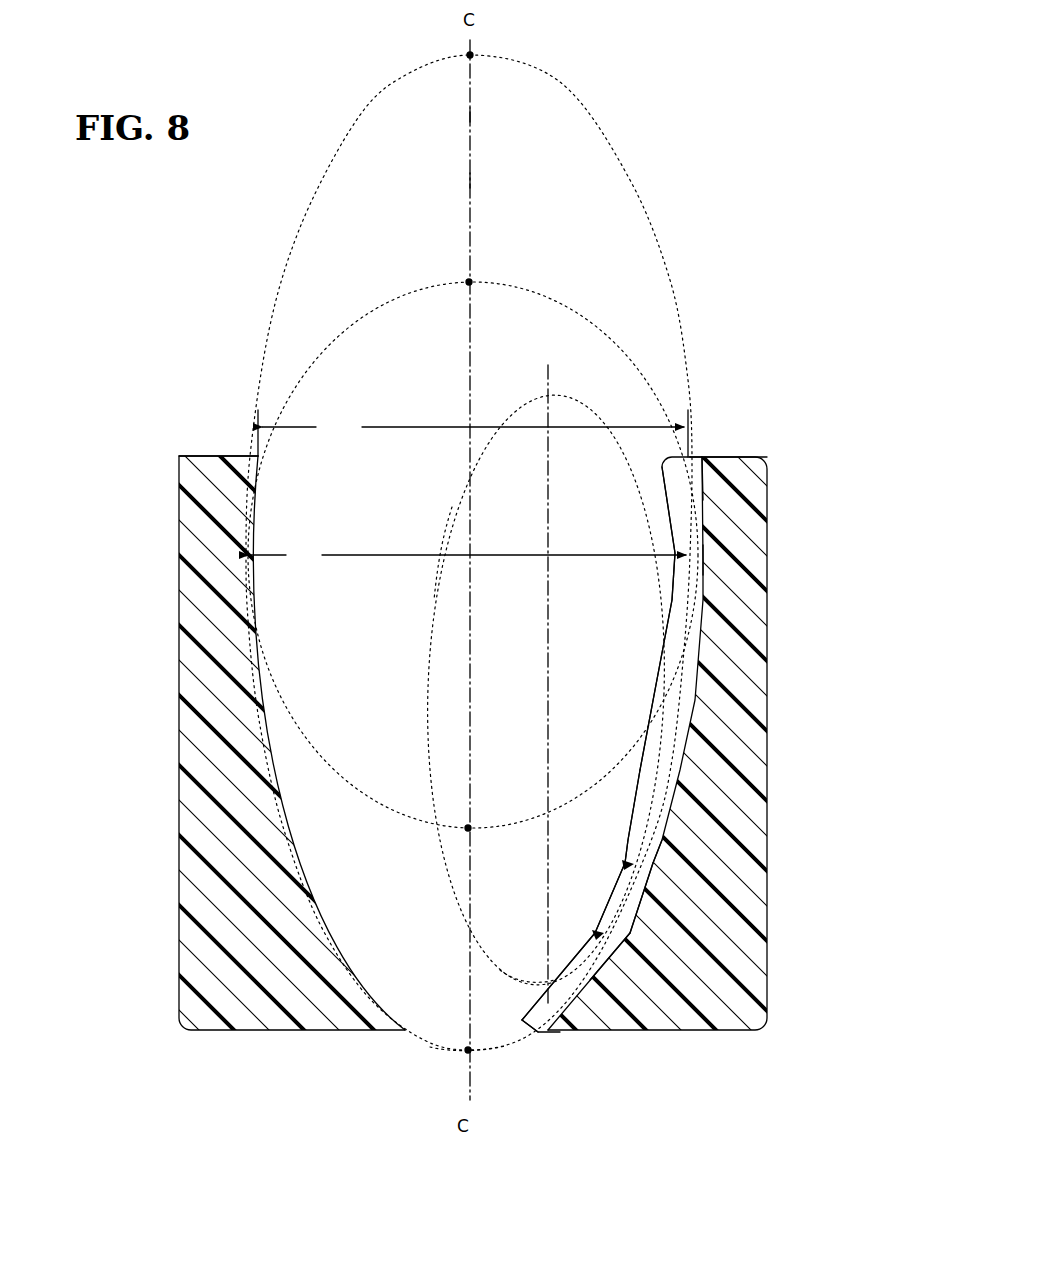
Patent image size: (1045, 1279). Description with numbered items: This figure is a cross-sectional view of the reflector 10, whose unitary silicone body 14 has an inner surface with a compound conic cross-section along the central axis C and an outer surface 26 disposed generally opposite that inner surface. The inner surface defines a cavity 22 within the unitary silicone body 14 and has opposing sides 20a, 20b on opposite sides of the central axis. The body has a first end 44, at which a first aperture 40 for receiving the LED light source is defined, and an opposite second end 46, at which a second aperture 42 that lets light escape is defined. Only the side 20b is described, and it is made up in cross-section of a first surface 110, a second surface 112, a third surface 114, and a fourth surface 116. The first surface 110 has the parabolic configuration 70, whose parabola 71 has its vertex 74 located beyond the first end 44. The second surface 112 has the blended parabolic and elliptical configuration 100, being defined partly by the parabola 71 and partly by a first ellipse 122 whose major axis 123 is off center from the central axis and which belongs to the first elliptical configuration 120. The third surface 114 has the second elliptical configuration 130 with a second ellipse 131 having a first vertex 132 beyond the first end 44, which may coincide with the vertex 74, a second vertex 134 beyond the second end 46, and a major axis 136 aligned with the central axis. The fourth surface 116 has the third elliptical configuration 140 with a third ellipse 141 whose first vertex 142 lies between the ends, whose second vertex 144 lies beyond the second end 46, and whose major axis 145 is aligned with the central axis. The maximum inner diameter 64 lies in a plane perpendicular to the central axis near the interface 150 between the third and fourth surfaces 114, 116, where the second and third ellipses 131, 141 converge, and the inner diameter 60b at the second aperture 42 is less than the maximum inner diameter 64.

The reflector 10 is at (780, 383).
The unitary silicone body 14 is at (706, 833).
The opposing side of inner surface 20a is at (282, 880).
The opposing side of inner surface 20b is at (708, 713).
The cavity 22 is at (384, 602).
The outer surface 26 is at (767, 665).
The first aperture 40 is at (437, 1030).
The second aperture 42 is at (297, 446).
The first end 44 is at (538, 1033).
The second end 46 is at (697, 457).
The inner diameter 60b is at (473, 433).
The maximum inner diameter 64 is at (467, 553).
The parabolic configuration 70 is at (612, 980).
The parabola 71 is at (505, 1052).
The vertex 74 is at (467, 1053).
The blended parabolic and elliptical configuration 100 is at (657, 893).
The first surface 110 is at (556, 984).
The second surface 112 is at (610, 898).
The third surface 114 is at (638, 768).
The fourth surface 116 is at (662, 516).
The first elliptical configuration 120 is at (637, 935).
The first ellipse 122 is at (452, 507).
The major axis 123 is at (556, 400).
The second elliptical configuration 130 is at (690, 668).
The second ellipse 131 is at (640, 187).
The first vertex 132 is at (468, 1050).
The second vertex 134 is at (473, 54).
The major axis 136 is at (472, 115).
The third elliptical configuration 140 is at (710, 518).
The third ellipse 141 is at (402, 287).
The first vertex 142 is at (469, 827).
The second vertex 144 is at (470, 281).
The major axis 145 is at (472, 180).
The interface 150 is at (703, 562).